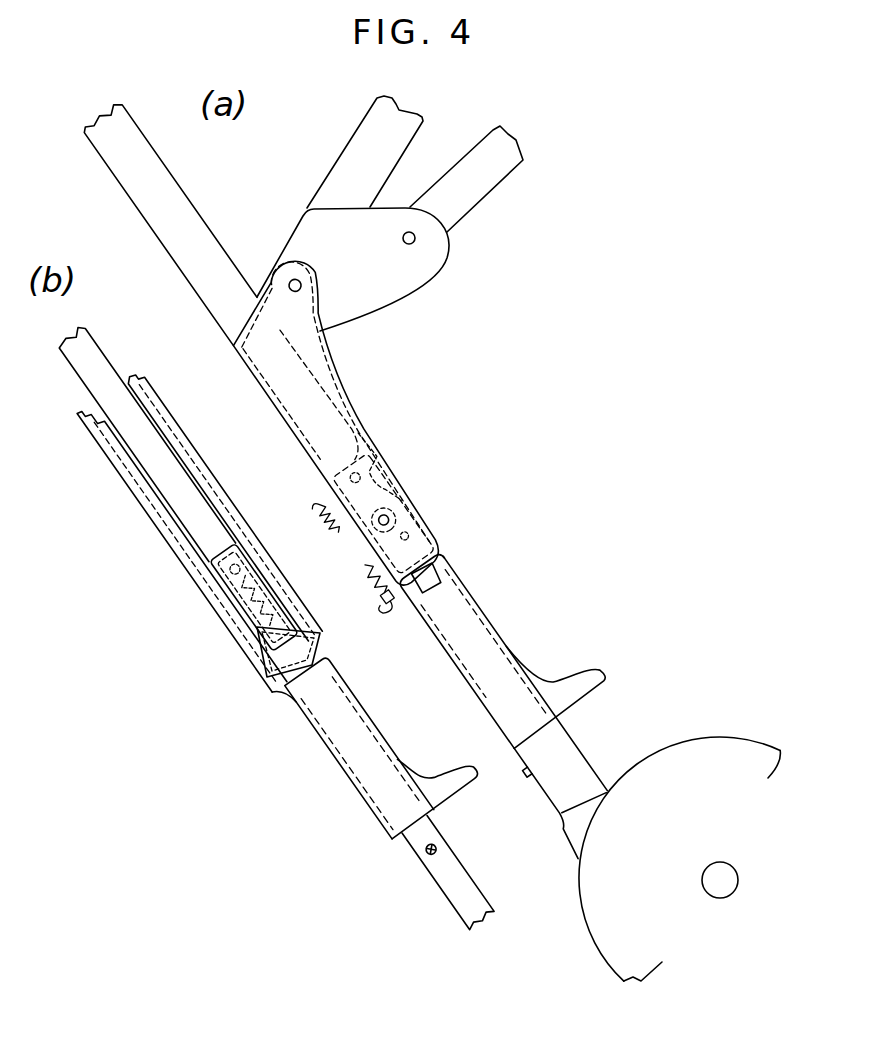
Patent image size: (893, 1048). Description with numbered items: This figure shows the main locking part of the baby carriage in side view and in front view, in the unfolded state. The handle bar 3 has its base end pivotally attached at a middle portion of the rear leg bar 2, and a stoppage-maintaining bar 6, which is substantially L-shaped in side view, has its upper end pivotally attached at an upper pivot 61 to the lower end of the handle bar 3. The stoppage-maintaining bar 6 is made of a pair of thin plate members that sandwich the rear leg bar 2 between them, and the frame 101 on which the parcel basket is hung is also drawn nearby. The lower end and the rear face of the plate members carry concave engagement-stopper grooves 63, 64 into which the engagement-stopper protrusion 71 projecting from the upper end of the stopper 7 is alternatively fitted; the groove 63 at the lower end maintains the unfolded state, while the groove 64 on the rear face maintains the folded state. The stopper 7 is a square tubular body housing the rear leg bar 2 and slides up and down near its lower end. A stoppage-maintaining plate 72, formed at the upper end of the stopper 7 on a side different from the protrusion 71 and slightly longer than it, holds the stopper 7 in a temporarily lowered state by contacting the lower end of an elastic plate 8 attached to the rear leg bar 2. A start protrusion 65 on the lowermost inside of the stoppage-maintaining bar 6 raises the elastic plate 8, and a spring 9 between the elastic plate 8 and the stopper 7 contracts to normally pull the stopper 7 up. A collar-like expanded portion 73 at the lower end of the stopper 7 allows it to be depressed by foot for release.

The rear leg bar 2 is at (173, 205).
The handle bar 3 is at (363, 133).
The frame 101 is at (473, 197).
The stoppage-maintaining bar 6 is at (267, 362).
The upper pivot 61 is at (303, 287).
The engagement-stopper concave groove 63 is at (430, 547).
The engagement-stopper concave groove 64 is at (397, 477).
The start protrusion 65 is at (405, 535).
The engagement-stopper protrusion 71 is at (413, 560).
The elastic plate 8 is at (353, 530).
The spring 9 is at (365, 572).
The stoppage-maintaining plate 72 is at (388, 590).
The stopper 7 is at (513, 707).
The collar-like expanded portion 73 is at (598, 675).